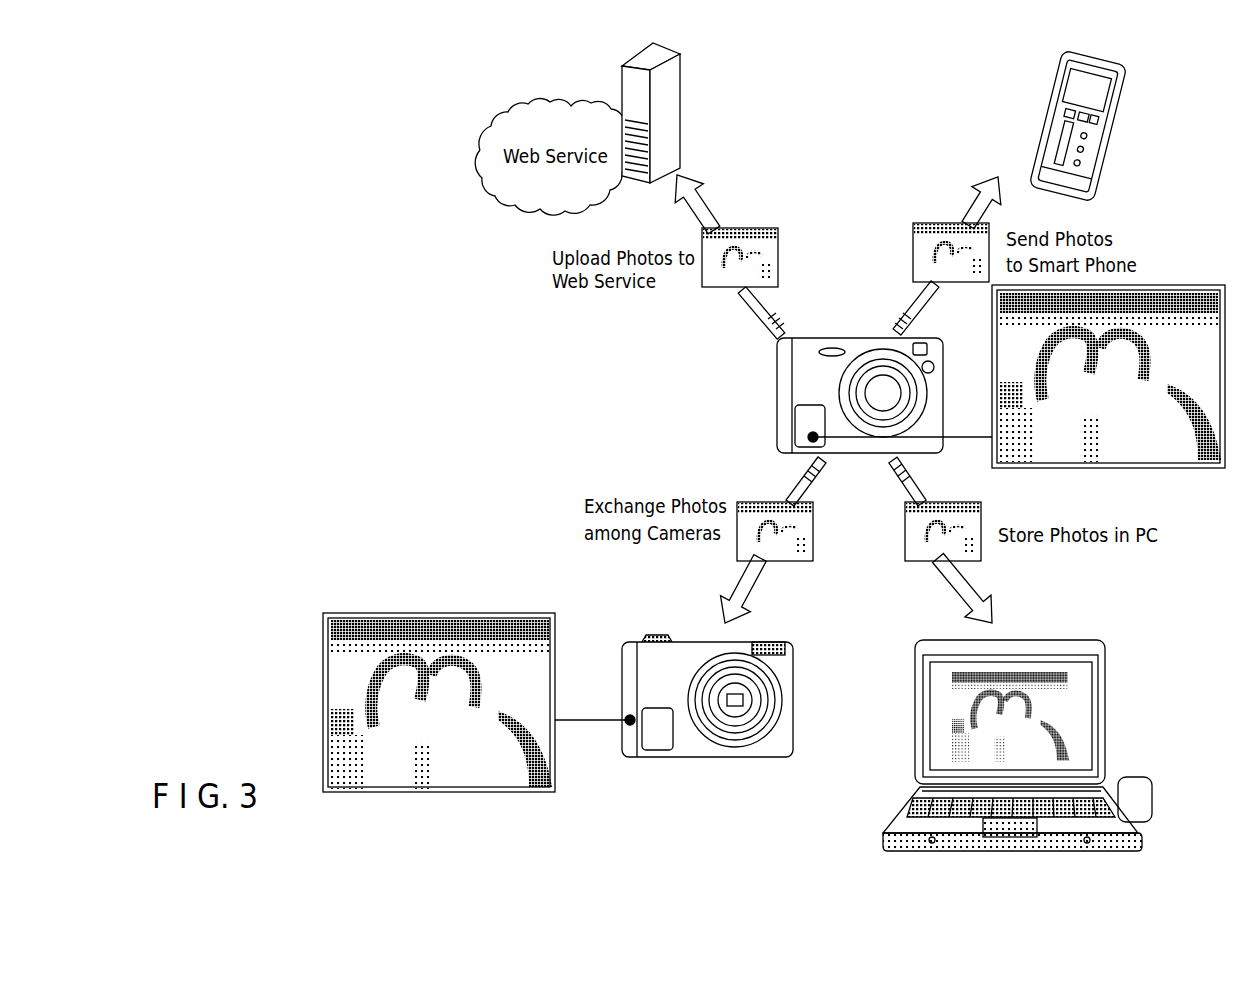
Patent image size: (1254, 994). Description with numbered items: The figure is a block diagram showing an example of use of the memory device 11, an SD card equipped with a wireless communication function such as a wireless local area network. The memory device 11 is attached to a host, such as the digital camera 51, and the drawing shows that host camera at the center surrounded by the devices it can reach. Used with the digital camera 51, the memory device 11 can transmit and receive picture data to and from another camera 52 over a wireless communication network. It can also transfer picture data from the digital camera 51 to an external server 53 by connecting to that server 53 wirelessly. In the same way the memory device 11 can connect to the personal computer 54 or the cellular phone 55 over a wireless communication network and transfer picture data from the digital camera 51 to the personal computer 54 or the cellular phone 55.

The memory device 11 is at (795, 425).
The digital camera 51 is at (845, 374).
The digital camera 52 is at (794, 672).
The server 53 is at (681, 98).
The personal computer 54 is at (1063, 640).
The cellular phone 55 is at (1121, 128).